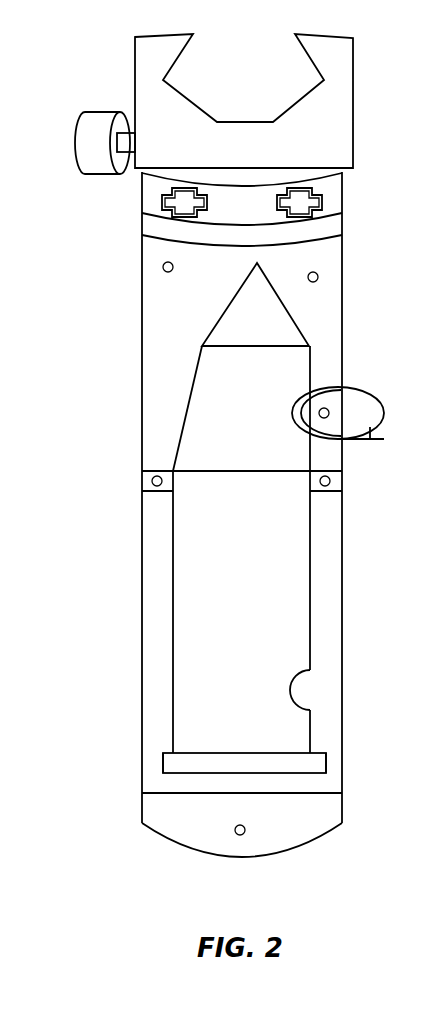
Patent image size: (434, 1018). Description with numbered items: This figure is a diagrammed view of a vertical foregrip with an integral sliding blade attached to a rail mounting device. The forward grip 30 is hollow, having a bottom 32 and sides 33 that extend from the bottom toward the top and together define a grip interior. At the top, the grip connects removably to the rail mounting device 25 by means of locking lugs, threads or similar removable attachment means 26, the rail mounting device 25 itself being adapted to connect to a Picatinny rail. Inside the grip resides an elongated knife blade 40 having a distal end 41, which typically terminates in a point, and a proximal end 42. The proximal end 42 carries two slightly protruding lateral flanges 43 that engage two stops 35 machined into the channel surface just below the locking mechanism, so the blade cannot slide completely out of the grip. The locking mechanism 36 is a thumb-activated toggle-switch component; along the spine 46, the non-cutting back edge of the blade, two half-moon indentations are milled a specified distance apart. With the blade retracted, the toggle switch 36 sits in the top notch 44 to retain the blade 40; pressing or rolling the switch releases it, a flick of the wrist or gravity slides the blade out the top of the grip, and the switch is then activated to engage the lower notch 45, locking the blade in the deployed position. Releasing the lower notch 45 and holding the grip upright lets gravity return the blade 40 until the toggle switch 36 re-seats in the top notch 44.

The rail mounting device 25 is at (135, 70).
The removable attachment means 26 is at (175, 200).
The forward grip 30 is at (66, 455).
The bottom 32 is at (278, 858).
The sides 33 is at (140, 536).
The stops 35 is at (145, 481).
The locking mechanism 36 is at (360, 400).
The knife blade 40 is at (252, 540).
The distal end 41 is at (262, 268).
The proximal end 42 is at (240, 760).
The lateral flanges 43 is at (163, 763).
The top notch 44 is at (292, 412).
The lower notch 45 is at (290, 673).
The spine 46 is at (310, 597).